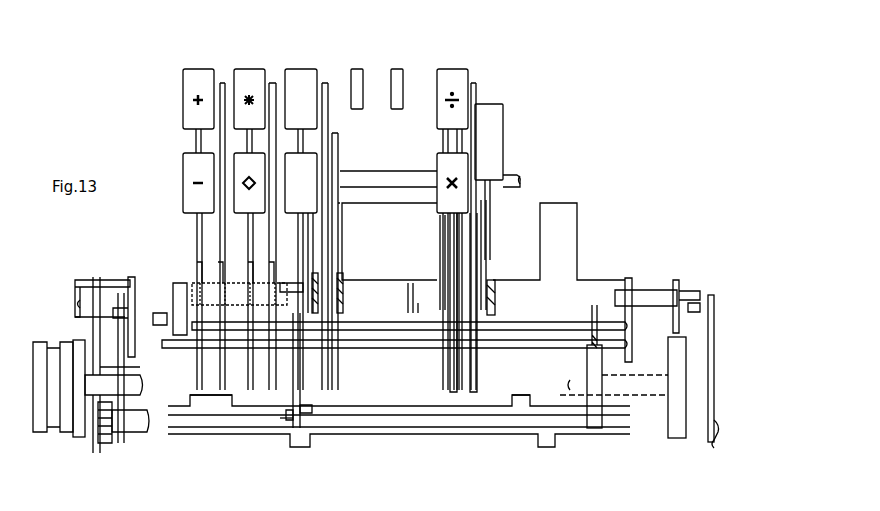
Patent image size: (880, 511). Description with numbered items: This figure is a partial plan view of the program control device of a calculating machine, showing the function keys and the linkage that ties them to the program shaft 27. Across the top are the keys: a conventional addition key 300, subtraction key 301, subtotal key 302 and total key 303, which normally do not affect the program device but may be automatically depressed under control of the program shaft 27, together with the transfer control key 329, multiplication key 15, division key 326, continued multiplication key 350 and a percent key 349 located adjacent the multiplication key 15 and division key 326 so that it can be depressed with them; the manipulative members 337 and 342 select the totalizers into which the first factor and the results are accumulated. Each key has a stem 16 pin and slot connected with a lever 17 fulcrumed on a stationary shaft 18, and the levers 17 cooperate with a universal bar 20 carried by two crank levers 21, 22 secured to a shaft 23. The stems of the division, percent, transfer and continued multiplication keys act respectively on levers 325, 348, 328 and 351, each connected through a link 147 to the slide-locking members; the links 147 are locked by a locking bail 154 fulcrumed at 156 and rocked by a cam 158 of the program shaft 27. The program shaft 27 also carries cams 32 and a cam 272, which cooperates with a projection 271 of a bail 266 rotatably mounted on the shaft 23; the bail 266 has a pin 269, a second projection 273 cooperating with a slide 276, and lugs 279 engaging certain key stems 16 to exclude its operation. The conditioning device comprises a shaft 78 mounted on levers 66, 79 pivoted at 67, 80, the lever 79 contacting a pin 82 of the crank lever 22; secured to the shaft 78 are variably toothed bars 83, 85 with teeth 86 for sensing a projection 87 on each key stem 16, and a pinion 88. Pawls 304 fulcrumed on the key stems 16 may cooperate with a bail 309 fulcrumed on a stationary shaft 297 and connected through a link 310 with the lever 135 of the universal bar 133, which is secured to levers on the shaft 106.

The addition key 300 is at (184, 90).
The total key 303 is at (250, 72).
The transfer control key 329 is at (304, 72).
The manipulative member 342 is at (359, 70).
The manipulative member 337 is at (399, 70).
The division key 326 is at (455, 72).
The percent key 349 is at (500, 112).
The subtraction key 301 is at (190, 163).
The subtotal key 302 is at (238, 158).
The continued multiplication key 350 is at (312, 161).
The multiplication key 15 is at (440, 165).
The stationary shaft 18 is at (516, 176).
The key stem 16 is at (475, 216).
The lever 17 is at (462, 239).
The lever 348 is at (488, 250).
The lever 325 is at (440, 255).
The bail 266 is at (412, 290).
The lugs 279 is at (578, 222).
The lever 351 is at (340, 202).
The lever 328 is at (315, 260).
The pawl 304 is at (275, 262).
The fulcrum 156 is at (600, 320).
The universal bar 20 is at (408, 345).
The bail 309 is at (210, 350).
The link 147 is at (495, 305).
The stationary shaft 297 is at (340, 322).
The locking bail 154 is at (415, 325).
The link 310 is at (293, 390).
The variably toothed bar 83 is at (358, 406).
The teeth 86 is at (302, 447).
The variably toothed bar 85 is at (389, 428).
The shaft 78 is at (430, 428).
The projection 87 is at (470, 381).
The universal bar 133 is at (312, 412).
The shaft 106 is at (290, 418).
The lever 135 is at (284, 418).
The shaft 23 is at (72, 285).
The pin 269 is at (699, 287).
The projection 271 is at (679, 325).
The cam 272 is at (668, 345).
The lever 66 is at (708, 357).
The pivot 67 is at (714, 437).
The crank lever 21 is at (603, 336).
The cam 158 is at (600, 374).
The shaft 27 is at (570, 380).
The cams 32 is at (48, 340).
The pin 82 is at (78, 336).
The slide 276 is at (96, 277).
The second projection 273 is at (80, 306).
The crank lever 22 is at (118, 322).
The lever 79 is at (140, 368).
The pinion 88 is at (105, 443).
The pivot 80 is at (135, 432).